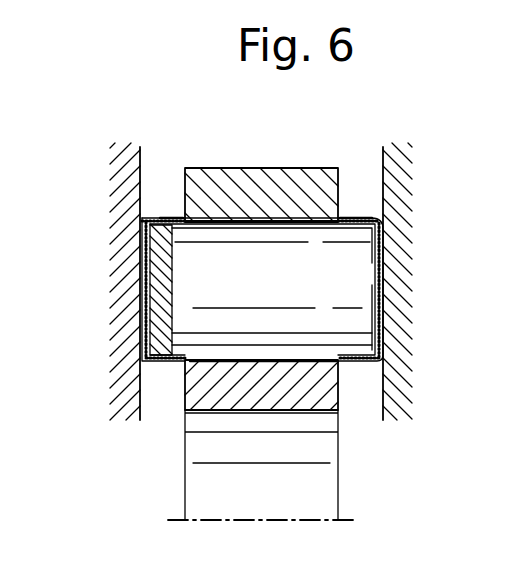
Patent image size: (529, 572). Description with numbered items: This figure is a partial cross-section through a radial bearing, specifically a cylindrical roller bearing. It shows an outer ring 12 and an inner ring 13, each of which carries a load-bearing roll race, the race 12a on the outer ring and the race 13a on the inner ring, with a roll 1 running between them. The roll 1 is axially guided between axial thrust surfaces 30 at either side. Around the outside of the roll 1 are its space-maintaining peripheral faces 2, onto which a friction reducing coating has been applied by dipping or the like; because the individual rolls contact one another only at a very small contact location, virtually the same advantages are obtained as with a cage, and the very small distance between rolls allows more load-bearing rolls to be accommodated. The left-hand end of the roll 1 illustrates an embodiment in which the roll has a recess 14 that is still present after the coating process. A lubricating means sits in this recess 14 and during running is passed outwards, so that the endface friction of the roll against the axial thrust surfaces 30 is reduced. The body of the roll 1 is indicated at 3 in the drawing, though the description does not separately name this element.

The roll 1 is at (356, 276).
The space-maintaining peripheral faces 2 is at (166, 212).
The inner body 3 is at (213, 268).
The outer ring 12 is at (304, 183).
The load-bearing roll race 12a is at (252, 214).
The inner ring 13 is at (214, 406).
The load-bearing roll race 13a is at (305, 364).
The recess 14 is at (143, 280).
The axial thrust surfaces 30 is at (142, 379).